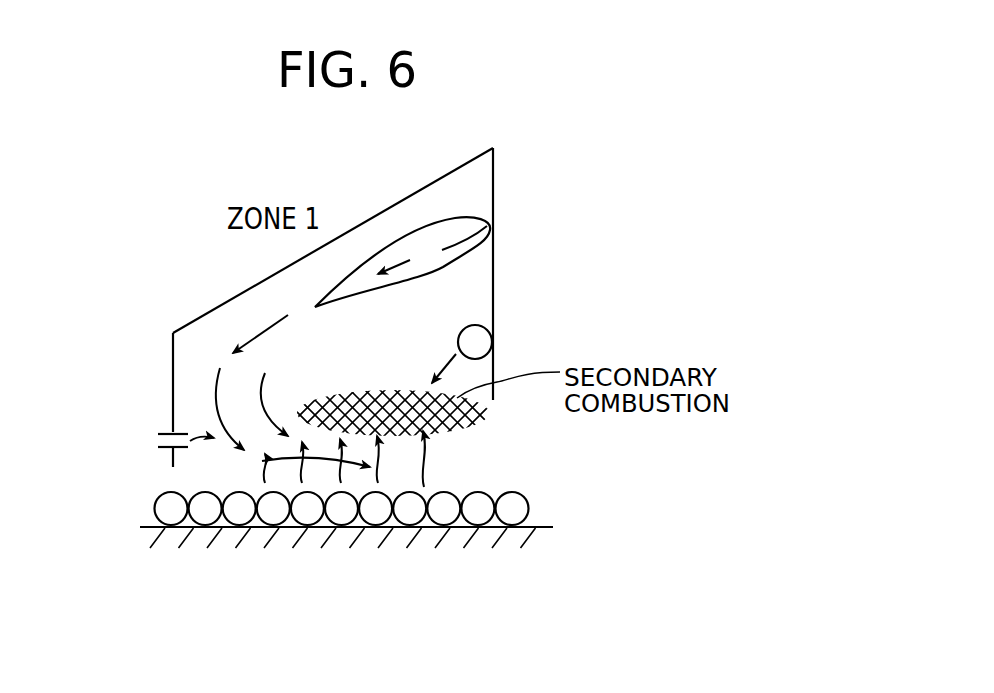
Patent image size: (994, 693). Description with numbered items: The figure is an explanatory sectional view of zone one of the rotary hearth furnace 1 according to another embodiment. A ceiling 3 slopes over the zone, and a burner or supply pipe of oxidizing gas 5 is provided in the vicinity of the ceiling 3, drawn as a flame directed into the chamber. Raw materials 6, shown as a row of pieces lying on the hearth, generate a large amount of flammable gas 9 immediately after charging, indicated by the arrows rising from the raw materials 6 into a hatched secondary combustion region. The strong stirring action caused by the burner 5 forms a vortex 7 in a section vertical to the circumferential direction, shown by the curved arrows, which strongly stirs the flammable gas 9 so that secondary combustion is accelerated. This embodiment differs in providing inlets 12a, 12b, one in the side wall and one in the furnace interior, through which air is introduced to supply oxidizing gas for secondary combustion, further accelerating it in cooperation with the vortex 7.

The rotary hearth furnace 1 is at (500, 178).
The ceiling 3 is at (433, 180).
The burner or supply pipe of oxidizing gas for combustion 5 is at (477, 255).
The raw materials 6 is at (313, 513).
The vortex 7 is at (213, 402).
The flammable gas 9 is at (426, 462).
The inlet 12a is at (157, 445).
The inlet 12b is at (489, 337).